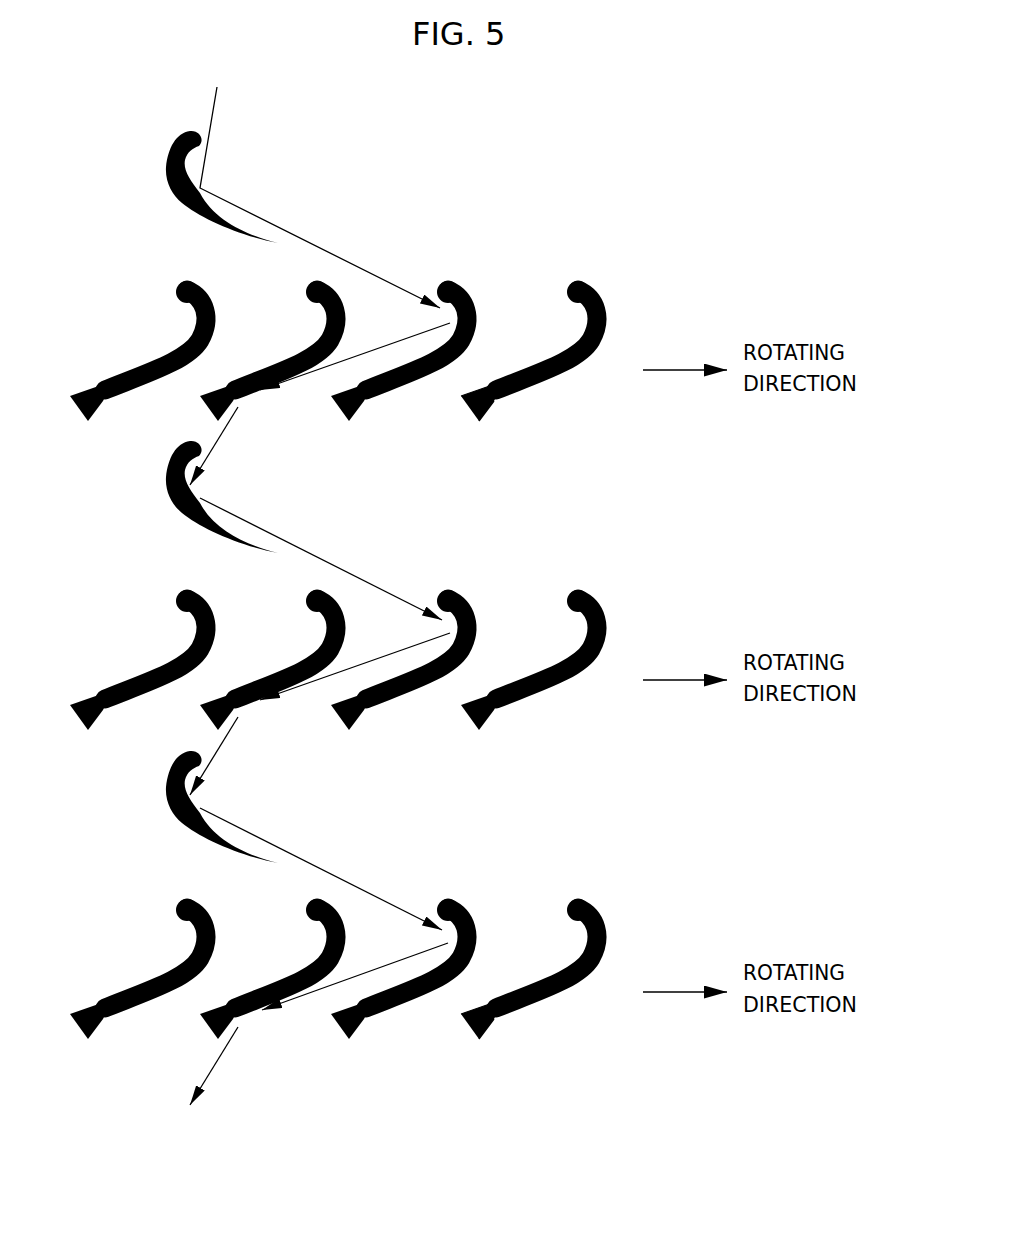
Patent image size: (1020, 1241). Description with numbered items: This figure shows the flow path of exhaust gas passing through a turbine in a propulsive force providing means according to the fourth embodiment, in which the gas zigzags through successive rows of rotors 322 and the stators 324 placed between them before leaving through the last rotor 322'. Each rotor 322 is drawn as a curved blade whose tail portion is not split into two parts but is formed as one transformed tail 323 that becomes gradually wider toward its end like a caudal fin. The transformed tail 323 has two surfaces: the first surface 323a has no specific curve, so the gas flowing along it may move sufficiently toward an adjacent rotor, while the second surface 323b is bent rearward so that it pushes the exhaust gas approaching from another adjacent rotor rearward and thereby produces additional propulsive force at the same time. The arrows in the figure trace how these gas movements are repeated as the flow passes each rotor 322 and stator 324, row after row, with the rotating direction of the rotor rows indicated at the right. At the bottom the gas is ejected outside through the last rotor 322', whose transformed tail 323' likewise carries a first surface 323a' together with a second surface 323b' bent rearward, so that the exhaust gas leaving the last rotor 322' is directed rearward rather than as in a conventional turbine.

The rotor 322 is at (546, 349).
The transformed tail 323 is at (458, 422).
The first surface 323a is at (479, 380).
The second surface 323b is at (513, 429).
The stator 324 is at (168, 184).
The last rotor 322' is at (546, 968).
The transformed tail of last rotor 323' is at (456, 1041).
The first surface of last rotor 323a' is at (479, 998).
The second surface of last rotor 323b' is at (513, 1048).